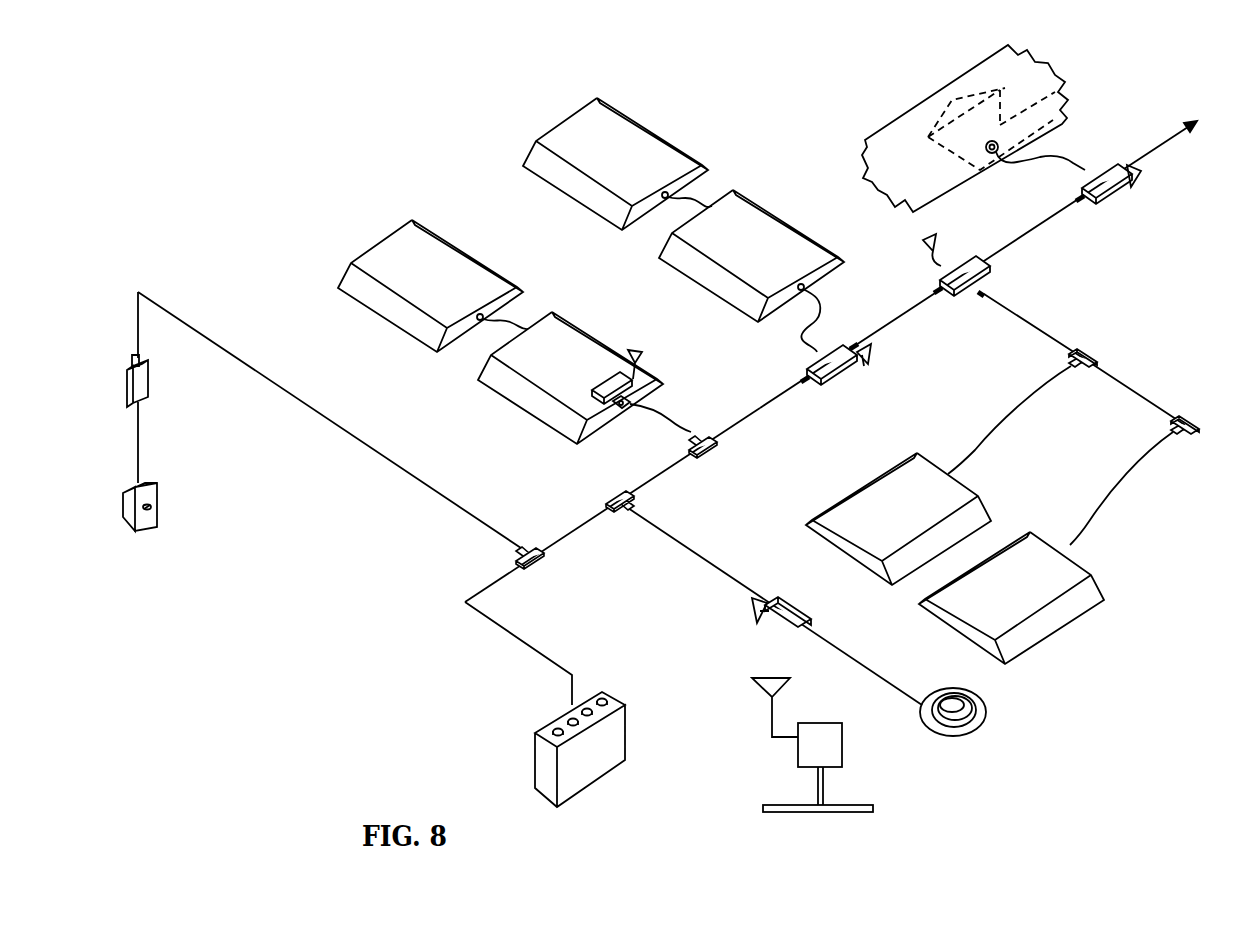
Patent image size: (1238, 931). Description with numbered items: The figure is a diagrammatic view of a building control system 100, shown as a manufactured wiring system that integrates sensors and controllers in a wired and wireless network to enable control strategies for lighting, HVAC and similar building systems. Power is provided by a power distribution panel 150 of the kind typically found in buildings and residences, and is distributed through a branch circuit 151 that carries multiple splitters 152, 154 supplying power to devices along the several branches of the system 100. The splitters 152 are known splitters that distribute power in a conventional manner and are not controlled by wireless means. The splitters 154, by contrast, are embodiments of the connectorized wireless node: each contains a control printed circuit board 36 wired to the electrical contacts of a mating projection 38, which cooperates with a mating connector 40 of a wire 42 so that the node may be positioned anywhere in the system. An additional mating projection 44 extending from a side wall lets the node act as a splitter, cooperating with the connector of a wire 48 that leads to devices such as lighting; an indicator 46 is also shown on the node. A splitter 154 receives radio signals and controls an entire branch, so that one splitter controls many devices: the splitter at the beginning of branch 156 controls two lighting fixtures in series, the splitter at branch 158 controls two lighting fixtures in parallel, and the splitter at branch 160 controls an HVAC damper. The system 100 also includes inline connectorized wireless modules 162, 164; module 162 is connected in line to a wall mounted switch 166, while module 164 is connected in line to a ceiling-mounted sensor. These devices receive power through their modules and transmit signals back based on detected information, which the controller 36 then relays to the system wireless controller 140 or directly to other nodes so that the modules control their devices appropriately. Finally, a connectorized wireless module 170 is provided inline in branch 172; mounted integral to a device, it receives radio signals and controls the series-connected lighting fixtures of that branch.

The building control system 100 is at (384, 129).
The control printed circuit board 36 is at (866, 344).
The mating projection 38 is at (808, 382).
The mating connector 40 is at (935, 300).
The wire 42 is at (1033, 228).
The additional mating projection 44 is at (818, 350).
The indicator flag 46 is at (815, 348).
The wire 48 is at (800, 344).
The system wireless controller 140 is at (833, 743).
The power distribution panel 150 is at (1092, 203).
The branch circuit 151 is at (580, 525).
The splitter 152 is at (716, 447).
The connectorized wireless splitter 154 is at (1116, 143).
The branch 156 is at (858, 253).
The branch 158 is at (1144, 363).
The branch 160 is at (1088, 125).
The inline connectorized wireless module 162 is at (148, 387).
The inline connectorized wireless module 164 is at (789, 592).
The wall mounted switch 166 is at (160, 512).
The connectorized wireless module 170 is at (599, 366).
The branch 172 is at (669, 429).